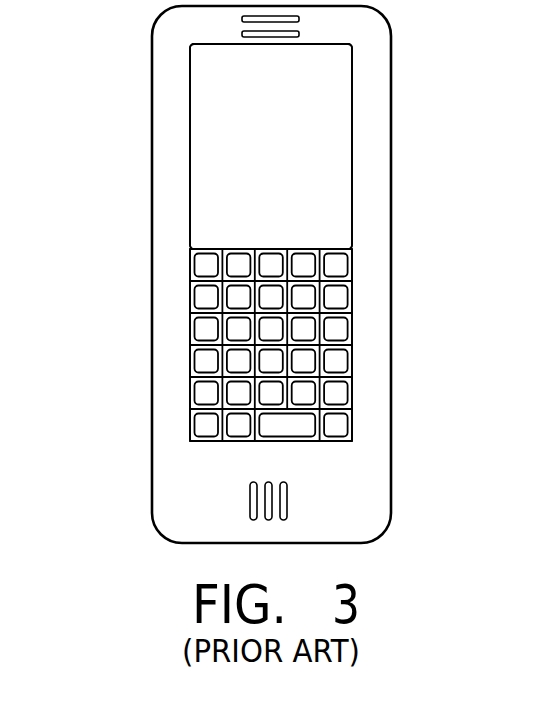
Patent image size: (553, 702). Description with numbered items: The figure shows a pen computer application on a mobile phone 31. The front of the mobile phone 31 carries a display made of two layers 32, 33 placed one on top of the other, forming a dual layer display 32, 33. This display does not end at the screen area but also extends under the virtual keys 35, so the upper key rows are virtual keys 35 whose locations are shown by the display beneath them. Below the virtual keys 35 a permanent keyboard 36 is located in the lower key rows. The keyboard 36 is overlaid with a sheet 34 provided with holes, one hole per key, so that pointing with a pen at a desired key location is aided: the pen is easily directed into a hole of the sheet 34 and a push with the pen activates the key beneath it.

The mobile phone 31 is at (375, 53).
The display layer 32 is at (326, 209).
The display layer 33 is at (271, 146).
The sheet provided with holes 34 is at (347, 332).
The virtual keys 35 is at (190, 251).
The permanent keyboard 36 is at (190, 313).